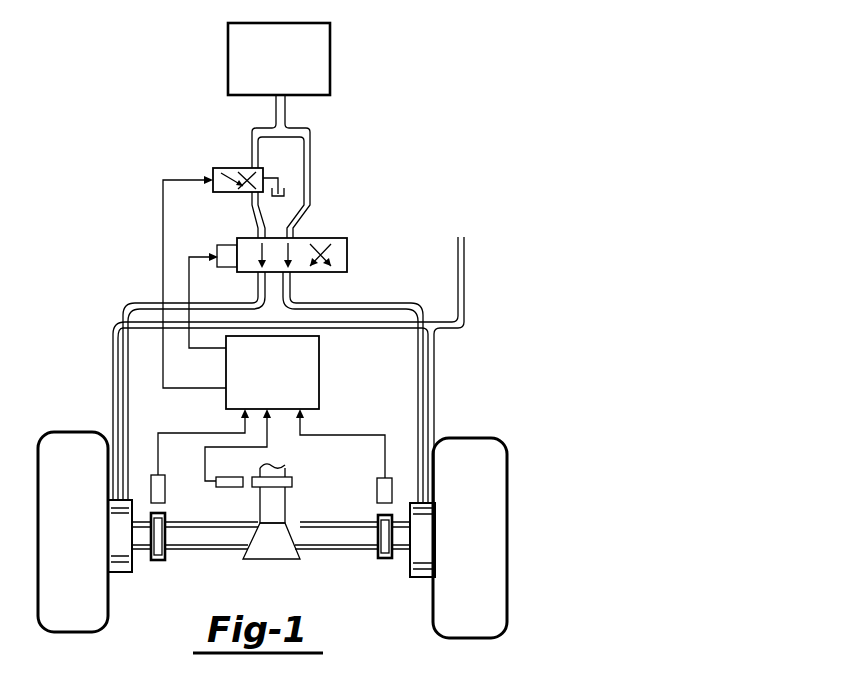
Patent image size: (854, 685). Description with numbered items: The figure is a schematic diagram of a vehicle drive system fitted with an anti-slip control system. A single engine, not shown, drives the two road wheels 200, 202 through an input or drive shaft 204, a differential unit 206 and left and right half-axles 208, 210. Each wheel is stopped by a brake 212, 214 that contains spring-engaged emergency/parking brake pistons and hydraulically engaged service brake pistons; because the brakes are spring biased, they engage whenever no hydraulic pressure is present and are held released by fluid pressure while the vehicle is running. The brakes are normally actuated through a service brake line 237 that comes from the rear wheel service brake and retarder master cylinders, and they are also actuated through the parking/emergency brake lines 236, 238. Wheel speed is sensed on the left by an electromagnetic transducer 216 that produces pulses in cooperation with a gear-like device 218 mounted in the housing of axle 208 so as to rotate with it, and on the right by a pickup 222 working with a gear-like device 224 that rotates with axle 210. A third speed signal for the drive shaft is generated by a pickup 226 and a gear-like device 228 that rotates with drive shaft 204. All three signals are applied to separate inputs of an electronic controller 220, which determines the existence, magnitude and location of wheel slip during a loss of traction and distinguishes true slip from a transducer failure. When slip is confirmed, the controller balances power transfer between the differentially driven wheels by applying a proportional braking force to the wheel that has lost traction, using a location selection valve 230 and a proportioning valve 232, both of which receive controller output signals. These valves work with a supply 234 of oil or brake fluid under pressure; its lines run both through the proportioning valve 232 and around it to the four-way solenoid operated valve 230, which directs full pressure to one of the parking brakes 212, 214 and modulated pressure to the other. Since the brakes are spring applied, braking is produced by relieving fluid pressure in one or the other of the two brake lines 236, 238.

The road wheel 200 is at (98, 406).
The road wheel 202 is at (465, 437).
The drive shaft 204 is at (286, 505).
The differential unit 206 is at (270, 561).
The half-axle 208 is at (215, 546).
The half-axle 210 is at (333, 553).
The brake 212 is at (123, 572).
The brake 214 is at (415, 576).
The electromagnetic transducer 216 is at (167, 487).
The gear-like device 218 is at (158, 561).
The electronic controller 220 is at (319, 377).
The pickup 222 is at (378, 489).
The gear-like device 224 is at (377, 556).
The pickup 226 is at (233, 488).
The gear-like device 228 is at (293, 480).
The location selection valve 230 is at (347, 254).
The proportioning valve 232 is at (222, 168).
The supply 234 is at (330, 62).
The parking/emergency brake line 236 is at (117, 351).
The service brake line 237 is at (451, 317).
The parking/emergency brake line 238 is at (427, 383).